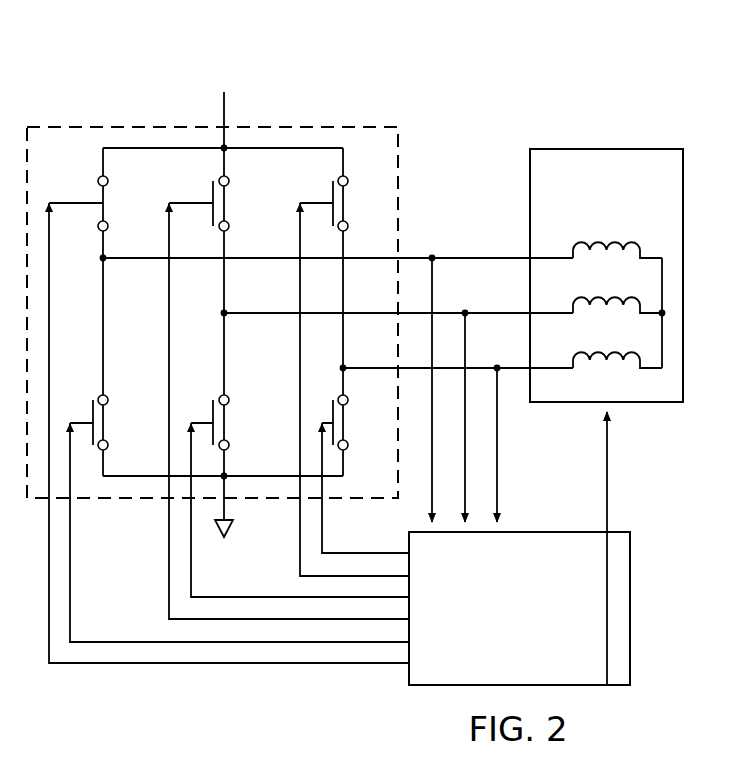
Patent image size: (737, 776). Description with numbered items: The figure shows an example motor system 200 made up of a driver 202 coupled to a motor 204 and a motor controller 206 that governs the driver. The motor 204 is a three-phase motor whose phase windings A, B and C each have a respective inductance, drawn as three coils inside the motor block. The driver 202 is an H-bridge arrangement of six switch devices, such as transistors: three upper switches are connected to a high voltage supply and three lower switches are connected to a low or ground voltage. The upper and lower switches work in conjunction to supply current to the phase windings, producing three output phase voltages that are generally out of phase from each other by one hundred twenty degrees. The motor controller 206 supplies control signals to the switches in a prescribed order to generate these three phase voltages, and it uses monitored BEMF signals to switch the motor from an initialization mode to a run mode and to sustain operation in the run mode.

The motor system 200 is at (471, 82).
The driver 202 is at (136, 125).
The motor 204 is at (617, 147).
The motor controller 206 is at (499, 655).